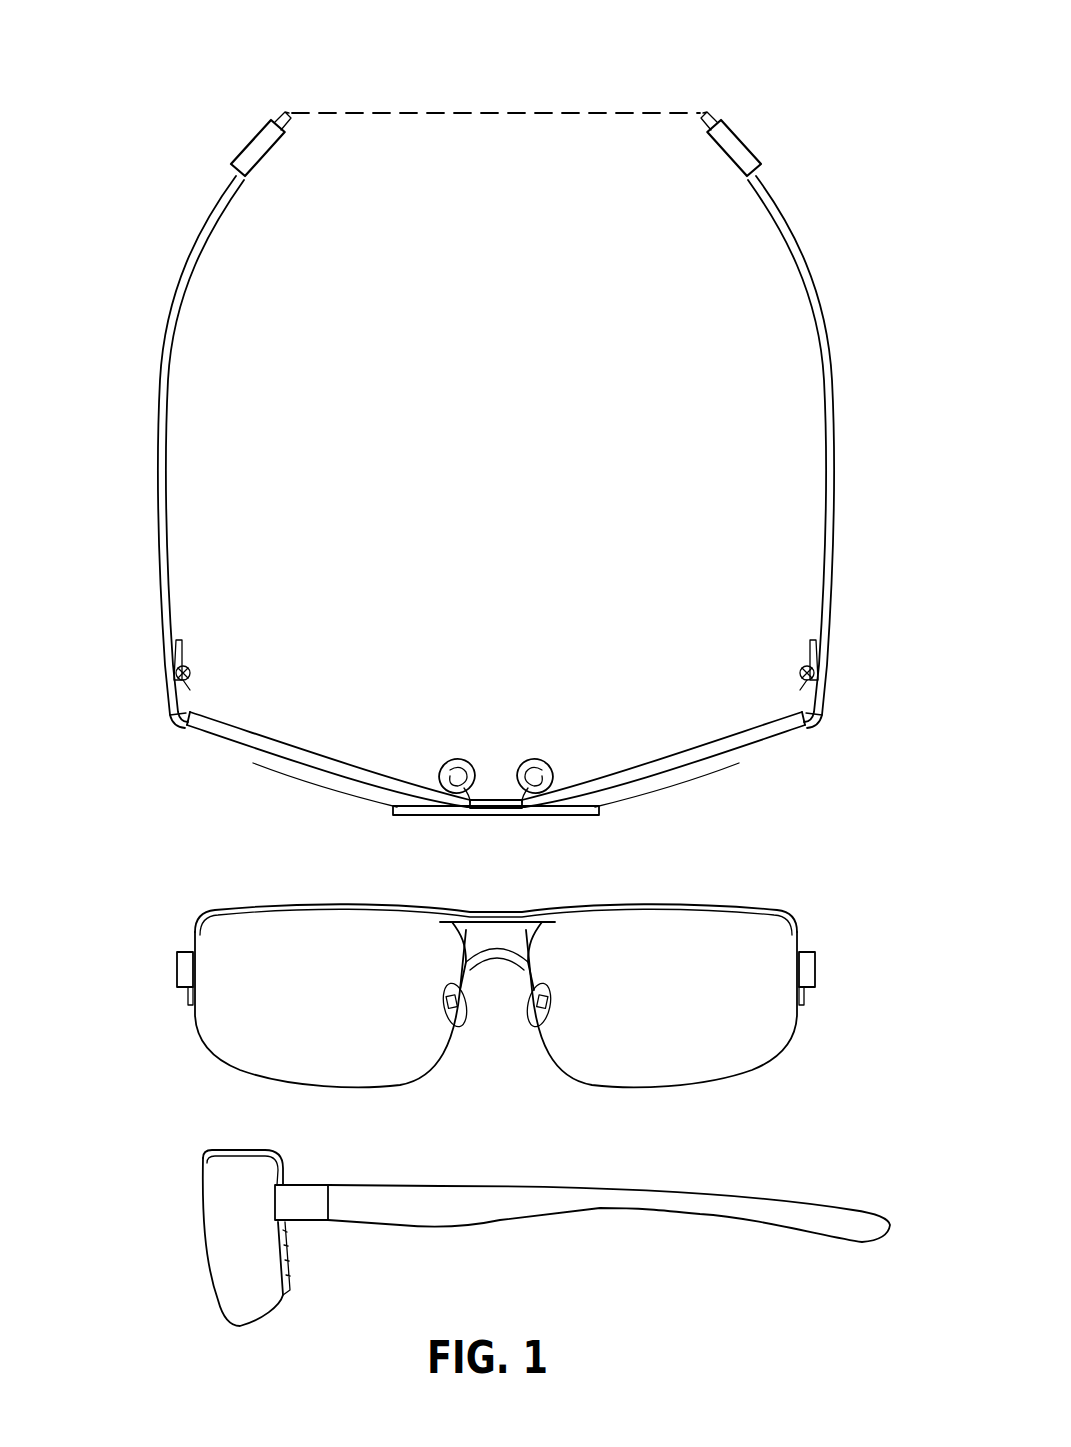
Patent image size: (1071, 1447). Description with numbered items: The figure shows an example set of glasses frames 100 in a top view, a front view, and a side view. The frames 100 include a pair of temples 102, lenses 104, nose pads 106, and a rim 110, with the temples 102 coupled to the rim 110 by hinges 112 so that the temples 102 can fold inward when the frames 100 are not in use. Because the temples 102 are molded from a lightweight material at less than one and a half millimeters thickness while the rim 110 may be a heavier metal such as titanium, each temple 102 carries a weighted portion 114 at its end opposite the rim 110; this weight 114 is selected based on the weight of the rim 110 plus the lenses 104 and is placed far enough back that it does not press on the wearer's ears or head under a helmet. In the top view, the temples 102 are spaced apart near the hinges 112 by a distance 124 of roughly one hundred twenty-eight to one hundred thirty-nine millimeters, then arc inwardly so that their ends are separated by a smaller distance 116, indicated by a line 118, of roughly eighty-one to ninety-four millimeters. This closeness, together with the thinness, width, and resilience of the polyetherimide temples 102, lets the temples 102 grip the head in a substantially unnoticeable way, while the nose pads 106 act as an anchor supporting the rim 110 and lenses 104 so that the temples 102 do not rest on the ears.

The glasses frames 100 is at (489, 548).
The temples 102 is at (545, 1215).
The lenses 104 is at (242, 1068).
The nose pads 106 is at (458, 760).
The rim 110 is at (223, 925).
The hinges 112 is at (190, 667).
The weighted portion 114 is at (245, 145).
The distance 116 is at (702, 100).
The line 118 is at (525, 118).
The distance 124 is at (823, 733).